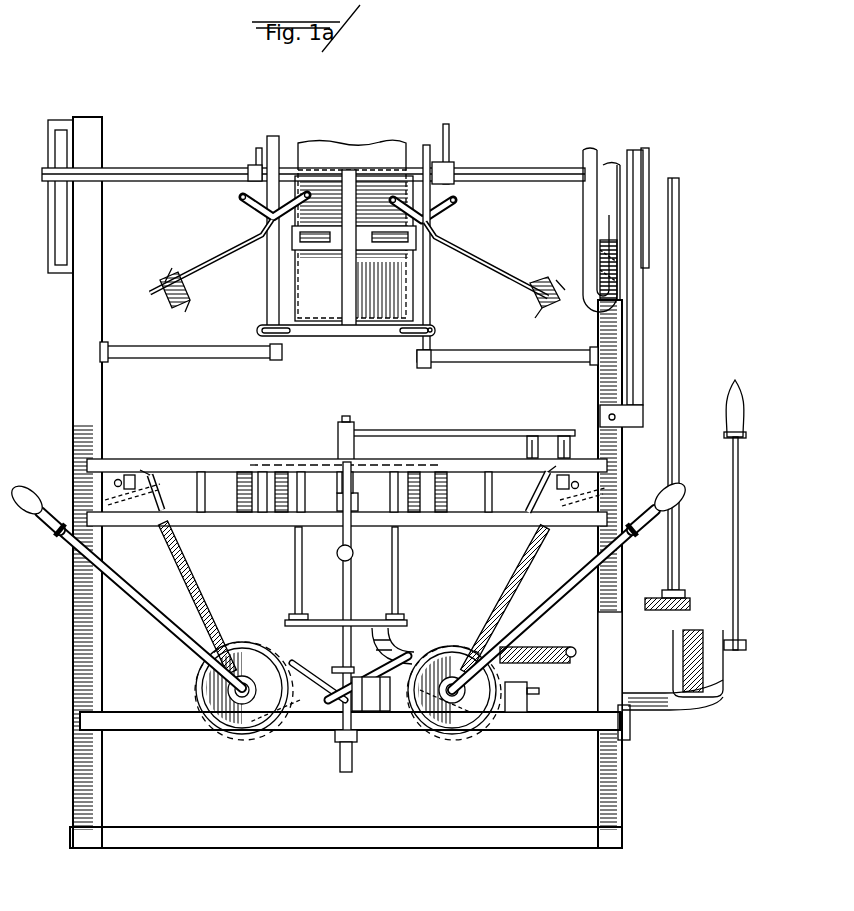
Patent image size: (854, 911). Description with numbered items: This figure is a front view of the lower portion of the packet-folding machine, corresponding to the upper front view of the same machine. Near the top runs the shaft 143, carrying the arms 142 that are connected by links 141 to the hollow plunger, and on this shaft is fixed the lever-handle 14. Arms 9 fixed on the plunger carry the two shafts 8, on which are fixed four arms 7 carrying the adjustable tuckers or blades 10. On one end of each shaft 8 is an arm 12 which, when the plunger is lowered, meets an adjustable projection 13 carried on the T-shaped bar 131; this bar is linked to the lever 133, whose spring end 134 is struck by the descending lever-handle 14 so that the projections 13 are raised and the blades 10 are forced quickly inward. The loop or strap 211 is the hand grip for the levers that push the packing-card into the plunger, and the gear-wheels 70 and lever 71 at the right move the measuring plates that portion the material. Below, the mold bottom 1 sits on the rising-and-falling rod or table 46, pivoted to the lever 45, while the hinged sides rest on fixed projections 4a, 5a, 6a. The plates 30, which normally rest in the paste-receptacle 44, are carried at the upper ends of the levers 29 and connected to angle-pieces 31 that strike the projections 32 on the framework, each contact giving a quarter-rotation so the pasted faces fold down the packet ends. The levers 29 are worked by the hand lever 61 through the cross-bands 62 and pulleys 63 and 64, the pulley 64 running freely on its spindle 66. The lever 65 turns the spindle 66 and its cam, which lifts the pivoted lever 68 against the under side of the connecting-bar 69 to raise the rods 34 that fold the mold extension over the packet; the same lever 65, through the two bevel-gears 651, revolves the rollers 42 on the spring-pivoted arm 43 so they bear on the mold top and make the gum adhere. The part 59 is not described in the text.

The bottom of the mold 1 is at (290, 460).
The fixed projection 4a is at (358, 495).
The fixed projection 5a is at (246, 512).
The fixed projection 6a is at (415, 512).
The arm 7 is at (213, 258).
The shaft 8 is at (243, 198).
The arm 9 is at (280, 175).
The tucker or blade 10 is at (187, 300).
The arm 12 is at (420, 208).
The adjustable projection 13 is at (290, 338).
The lever-handle 14 is at (643, 160).
The lever 29 is at (205, 597).
The plate 30 is at (128, 505).
The angle-piece 31 is at (158, 475).
The projection 32 is at (197, 492).
The rod or projection 34 is at (295, 588).
The roller 42 is at (526, 450).
The spring-pivoted arm 43 is at (462, 430).
The paste-receptacle 44 is at (138, 506).
The lever 45 is at (353, 555).
The rising-and-falling rod or table 46 is at (364, 612).
The pin 59 is at (278, 512).
The lever 61 is at (195, 660).
The cross-band 62 is at (308, 667).
The pulley 63 is at (255, 657).
The pulley 64 is at (453, 660).
The lever 65 is at (580, 586).
The spindle 66 is at (452, 692).
The pivoted lever 68 is at (412, 648).
The connecting-bar 69 is at (365, 622).
The gear-wheel 70 is at (680, 602).
The lever 71 is at (740, 495).
The T-shaped bar 131 is at (355, 337).
The lever 133 is at (597, 148).
The spring end 134 is at (625, 285).
The link 141 is at (257, 152).
The arm 142 is at (250, 170).
The shaft 143 is at (150, 180).
The loop or strap 211 is at (385, 240).
The bevel-gear 651 is at (365, 735).